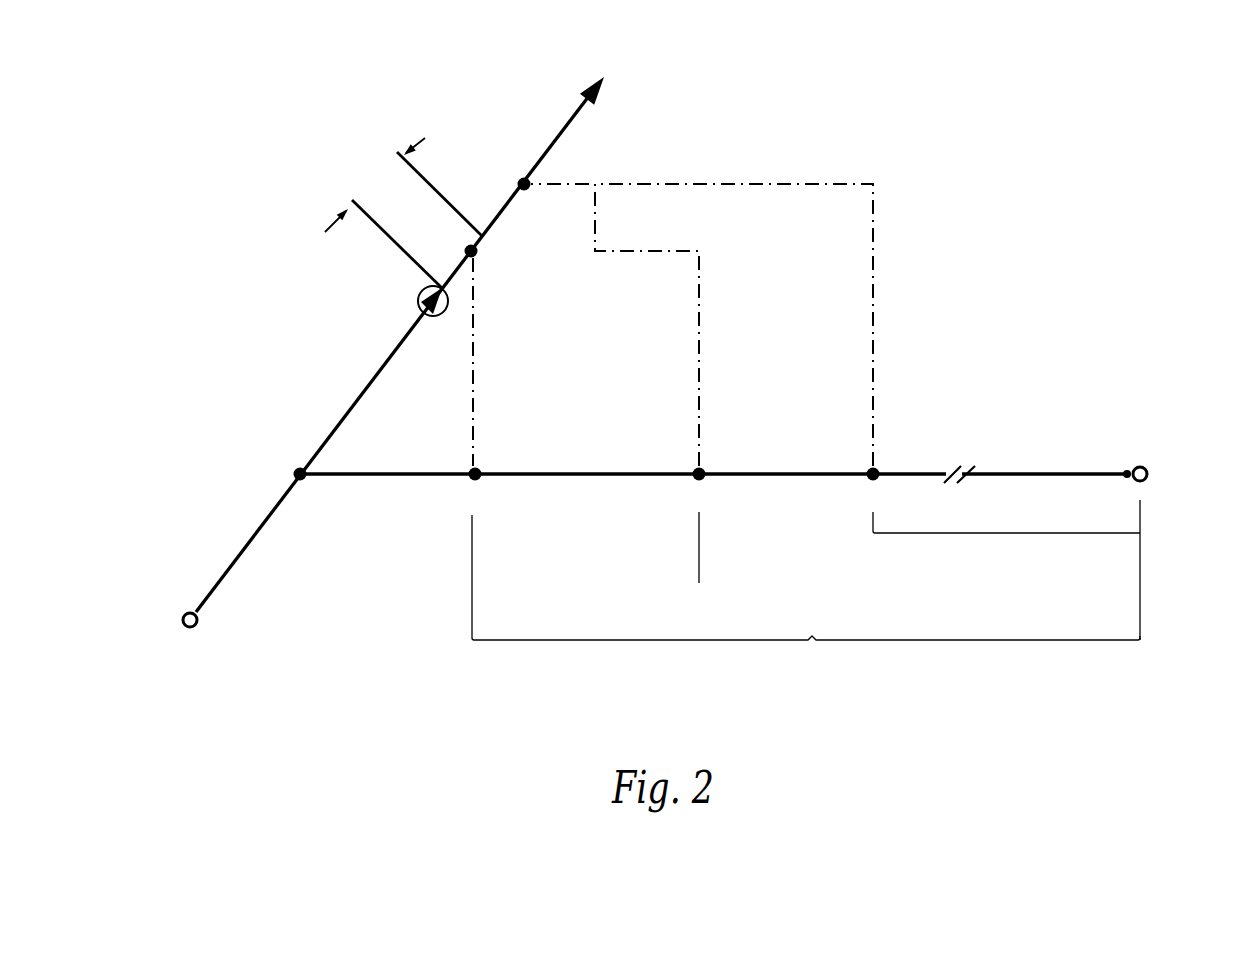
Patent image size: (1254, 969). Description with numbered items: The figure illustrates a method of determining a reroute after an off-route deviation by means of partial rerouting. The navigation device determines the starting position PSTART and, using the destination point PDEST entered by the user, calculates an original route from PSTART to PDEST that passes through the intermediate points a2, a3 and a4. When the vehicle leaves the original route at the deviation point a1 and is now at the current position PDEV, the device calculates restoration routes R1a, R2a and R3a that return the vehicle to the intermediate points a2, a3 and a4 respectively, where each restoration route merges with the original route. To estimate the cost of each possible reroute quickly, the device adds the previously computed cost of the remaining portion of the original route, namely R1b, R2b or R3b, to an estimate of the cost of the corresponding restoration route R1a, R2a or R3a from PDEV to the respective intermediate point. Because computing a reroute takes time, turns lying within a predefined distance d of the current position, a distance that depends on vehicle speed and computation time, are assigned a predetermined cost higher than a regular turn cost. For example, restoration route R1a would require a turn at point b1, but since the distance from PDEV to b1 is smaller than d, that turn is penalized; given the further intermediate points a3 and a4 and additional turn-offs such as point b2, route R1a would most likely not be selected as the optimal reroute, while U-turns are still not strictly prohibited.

The starting position PSTART is at (211, 637).
The destination point PDEST is at (1187, 474).
The current position after off-route deviation PDEV is at (427, 291).
The off-route deviation point a1 is at (310, 487).
The intermediate point a2 is at (479, 490).
The intermediate point a3 is at (700, 488).
The intermediate point a4 is at (873, 488).
The turn point b1 is at (476, 256).
The turn-off point b2 is at (509, 180).
The predefined distance d is at (387, 145).
The restoration route R1a is at (477, 407).
The restoration route R2a is at (699, 289).
The restoration route R3a is at (873, 245).
The portion of original route R1b is at (806, 594).
The portion of original route R2b is at (928, 585).
The portion of original route R3b is at (1006, 570).